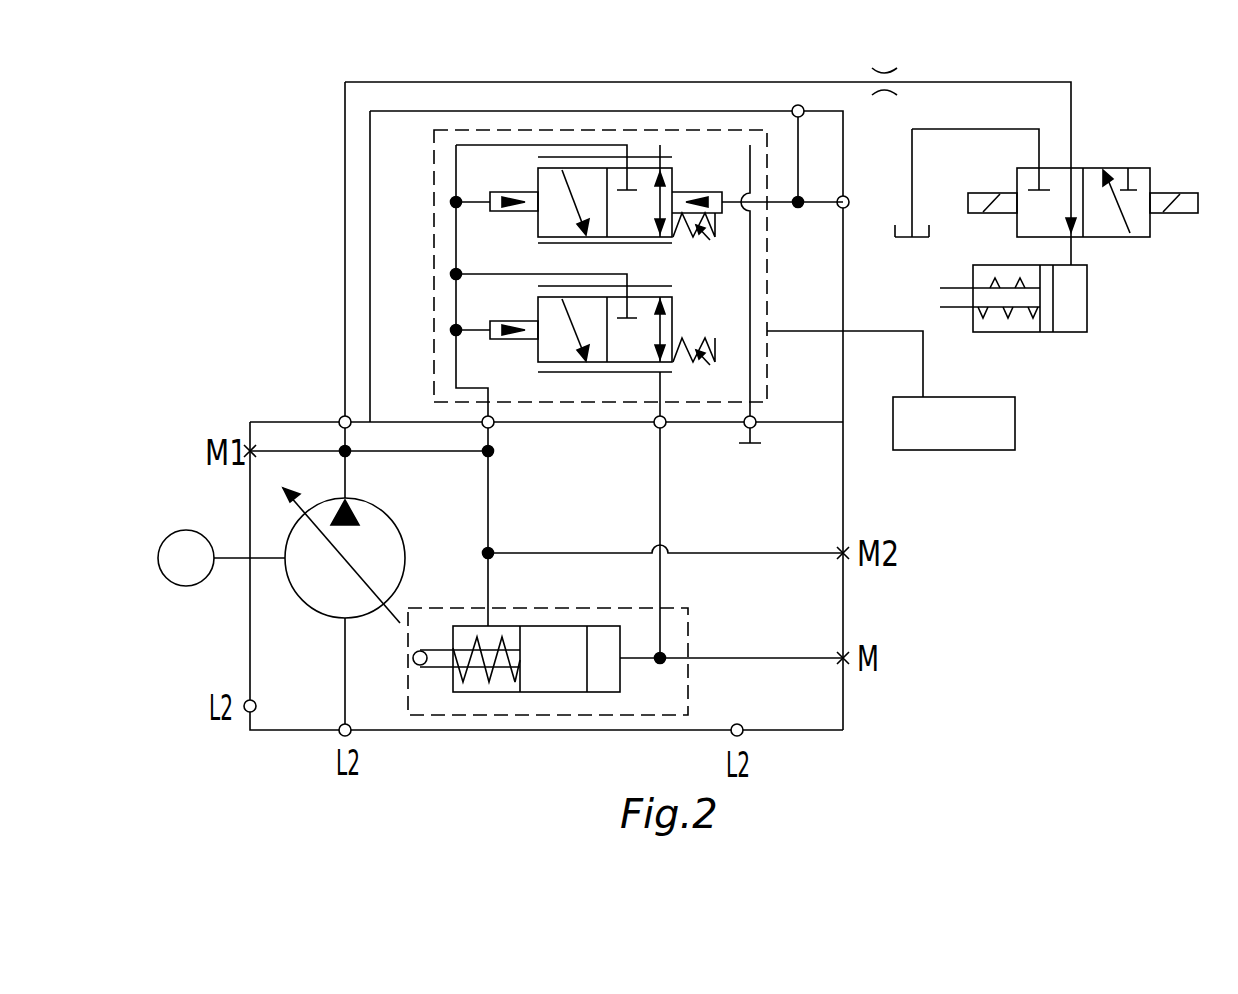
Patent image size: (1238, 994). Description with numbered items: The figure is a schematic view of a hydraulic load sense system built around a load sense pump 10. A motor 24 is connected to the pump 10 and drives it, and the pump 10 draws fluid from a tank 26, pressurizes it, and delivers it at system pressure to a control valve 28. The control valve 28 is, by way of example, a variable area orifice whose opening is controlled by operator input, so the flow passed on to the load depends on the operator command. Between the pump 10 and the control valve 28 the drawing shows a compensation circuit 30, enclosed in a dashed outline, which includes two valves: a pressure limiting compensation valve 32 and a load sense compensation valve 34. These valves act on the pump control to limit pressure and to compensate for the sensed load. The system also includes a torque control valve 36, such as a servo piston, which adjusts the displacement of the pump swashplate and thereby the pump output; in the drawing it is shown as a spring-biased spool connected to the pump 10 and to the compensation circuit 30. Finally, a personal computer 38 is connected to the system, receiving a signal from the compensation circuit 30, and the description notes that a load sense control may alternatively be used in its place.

The load sense pump 10 is at (393, 515).
The motor 24 is at (166, 535).
The tank 26 is at (548, 673).
The control valve 28 is at (883, 65).
The compensation circuit 30 is at (767, 258).
The pressure limiting compensation valve 32 is at (587, 157).
The load sense compensation valve 34 is at (623, 372).
The torque control valve 36 is at (555, 626).
The personal computer 38 is at (985, 397).